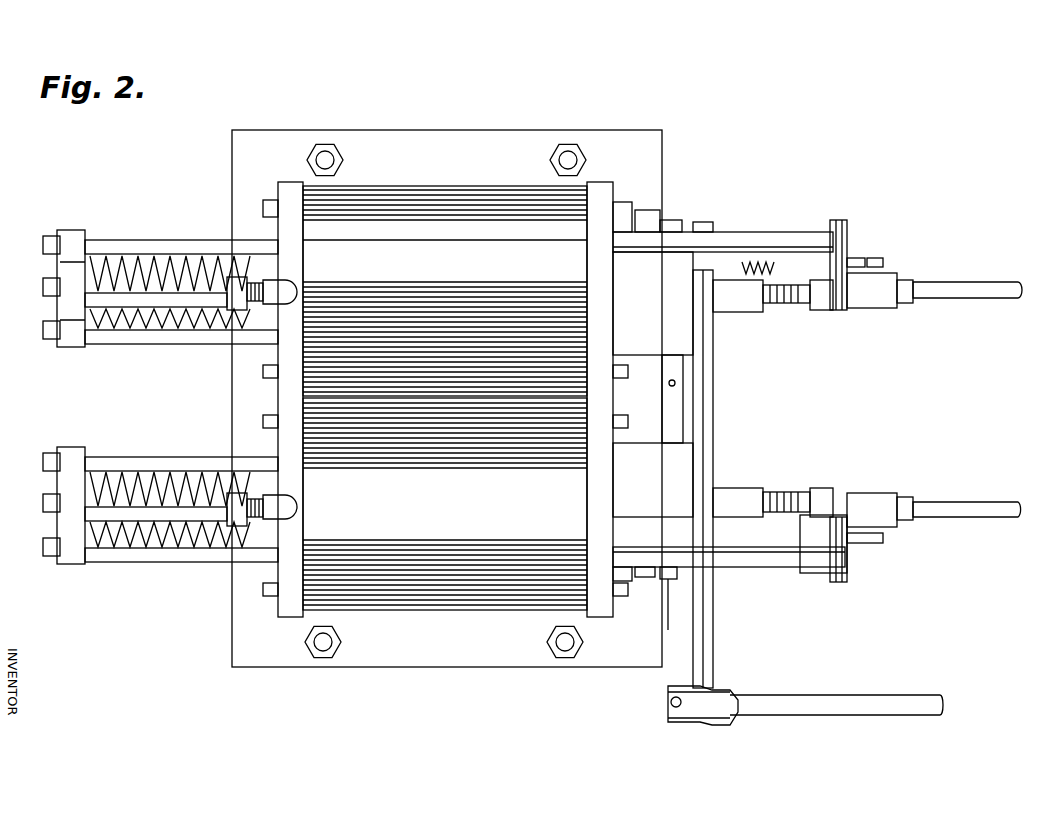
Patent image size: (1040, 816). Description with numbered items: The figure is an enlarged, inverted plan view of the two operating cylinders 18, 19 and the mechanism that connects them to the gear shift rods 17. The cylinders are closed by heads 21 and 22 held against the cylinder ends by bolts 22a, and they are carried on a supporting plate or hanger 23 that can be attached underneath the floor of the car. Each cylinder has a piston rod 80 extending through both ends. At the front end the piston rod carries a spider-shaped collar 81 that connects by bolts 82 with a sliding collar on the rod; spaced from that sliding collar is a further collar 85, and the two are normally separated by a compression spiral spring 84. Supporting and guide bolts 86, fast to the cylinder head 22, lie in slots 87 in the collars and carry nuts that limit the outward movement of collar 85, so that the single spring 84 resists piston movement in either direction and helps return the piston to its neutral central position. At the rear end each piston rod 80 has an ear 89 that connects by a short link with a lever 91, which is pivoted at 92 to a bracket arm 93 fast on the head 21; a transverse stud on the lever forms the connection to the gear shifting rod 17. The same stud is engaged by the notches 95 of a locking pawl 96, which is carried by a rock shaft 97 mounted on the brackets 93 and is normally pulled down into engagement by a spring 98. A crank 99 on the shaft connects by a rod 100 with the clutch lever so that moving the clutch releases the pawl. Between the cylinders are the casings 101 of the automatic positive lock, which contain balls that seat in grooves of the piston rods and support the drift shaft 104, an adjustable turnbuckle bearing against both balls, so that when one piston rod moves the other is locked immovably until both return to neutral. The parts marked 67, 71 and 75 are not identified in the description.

The gear shift rod 17 is at (986, 294).
The cylinder 18 is at (455, 530).
The cylinder 19 is at (380, 240).
The cylinder head 21 is at (602, 183).
The cylinder head 22 is at (290, 188).
The bolts 22a is at (262, 422).
The supporting plate or hanger 23 is at (496, 666).
The plunger head 67 is at (280, 290).
The bolt 71 is at (680, 222).
The plunger head 75 is at (272, 508).
The piston rod 80 is at (150, 522).
The collar 81 is at (60, 307).
The bolts 82 is at (112, 292).
The compression spiral spring 84 is at (122, 262).
The collar 85 is at (80, 262).
The supporting and guide bolts 86 is at (162, 240).
The slots 87 is at (86, 240).
The ear 89 is at (777, 304).
The lever 91 is at (830, 290).
The pivot 92 is at (838, 228).
The bracket arm 93 is at (745, 237).
The notches 95 is at (878, 260).
The locking pawl 96 is at (856, 258).
The rock shaft 97 is at (714, 628).
The spring 98 is at (762, 258).
The crank 99 is at (710, 690).
The rod 100 is at (830, 697).
The casing 101 is at (680, 455).
The drift shaft 104 is at (684, 390).